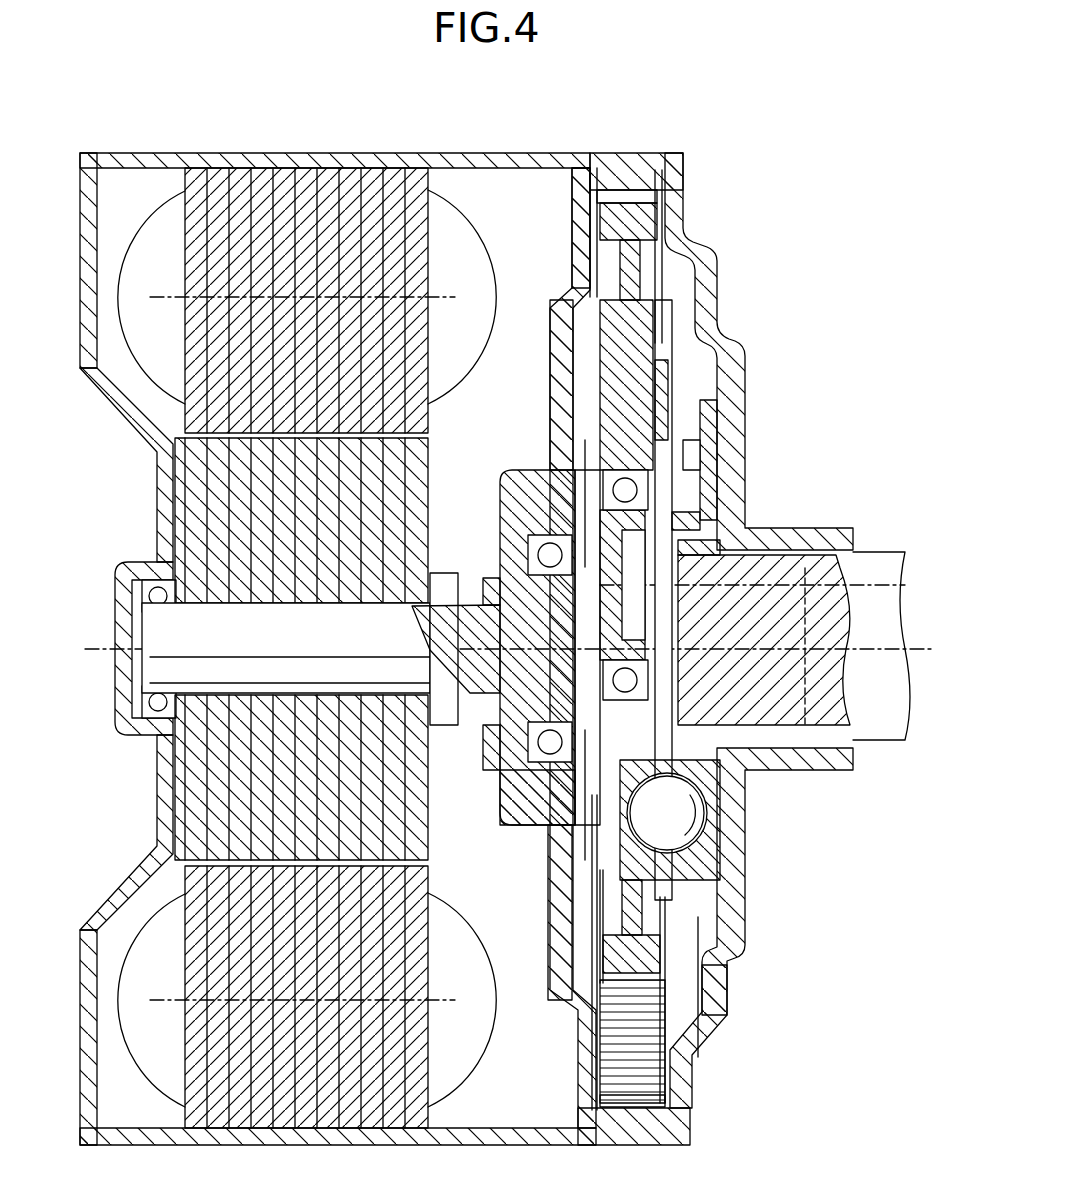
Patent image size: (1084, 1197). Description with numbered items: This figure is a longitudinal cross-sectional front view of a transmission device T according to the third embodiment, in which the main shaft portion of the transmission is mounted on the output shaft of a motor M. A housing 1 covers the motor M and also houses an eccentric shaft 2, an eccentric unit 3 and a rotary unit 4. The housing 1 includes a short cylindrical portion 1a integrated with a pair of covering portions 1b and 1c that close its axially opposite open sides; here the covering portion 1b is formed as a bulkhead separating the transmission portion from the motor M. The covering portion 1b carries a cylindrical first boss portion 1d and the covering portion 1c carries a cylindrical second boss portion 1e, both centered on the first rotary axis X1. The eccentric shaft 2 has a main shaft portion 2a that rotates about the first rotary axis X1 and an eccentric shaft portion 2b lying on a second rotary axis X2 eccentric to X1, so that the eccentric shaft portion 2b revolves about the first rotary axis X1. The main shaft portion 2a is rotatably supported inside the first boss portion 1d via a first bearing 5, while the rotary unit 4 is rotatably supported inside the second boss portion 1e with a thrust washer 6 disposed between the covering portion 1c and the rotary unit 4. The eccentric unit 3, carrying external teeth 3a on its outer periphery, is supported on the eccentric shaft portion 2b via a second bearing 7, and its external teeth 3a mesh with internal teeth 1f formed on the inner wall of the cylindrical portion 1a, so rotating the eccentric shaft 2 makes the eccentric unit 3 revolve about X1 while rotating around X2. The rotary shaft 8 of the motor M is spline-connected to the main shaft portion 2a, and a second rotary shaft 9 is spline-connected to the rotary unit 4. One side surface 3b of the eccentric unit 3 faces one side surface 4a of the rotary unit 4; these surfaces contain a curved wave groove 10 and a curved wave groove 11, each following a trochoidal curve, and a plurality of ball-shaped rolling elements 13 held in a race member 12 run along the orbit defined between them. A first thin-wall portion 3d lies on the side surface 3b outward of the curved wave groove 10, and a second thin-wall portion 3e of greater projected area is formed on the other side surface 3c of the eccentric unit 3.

The housing 1 is at (497, 150).
The cylindrical portion 1a is at (626, 158).
The covering portion 1b is at (578, 262).
The covering portion 1c is at (716, 253).
The first boss portion 1d is at (483, 749).
The second boss portion 1e is at (820, 771).
The internal teeth 1f is at (628, 1105).
The eccentric shaft 2 is at (509, 472).
The main shaft portion 2a is at (490, 583).
The eccentric shaft portion 2b is at (584, 516).
The eccentric unit 3 is at (513, 812).
The external teeth 3a is at (645, 975).
The one side surface 3b is at (712, 950).
The other side surface 3c is at (600, 838).
The first thin-wall portion 3d is at (640, 935).
The second thin-wall portion 3e is at (605, 935).
The rotary unit 4 is at (700, 412).
The one side surface 4a is at (686, 521).
The first bearing 5 is at (600, 775).
The thrust washer 6 is at (712, 480).
The second bearing 7 is at (561, 452).
The rotary shaft 8 is at (311, 661).
The second rotary shaft 9 is at (883, 661).
The curved wave groove 10 is at (600, 368).
The curved wave groove 11 is at (700, 450).
The race member 12 is at (668, 378).
The rolling elements 13 is at (667, 813).
The motor M is at (186, 205).
The transmission device T is at (781, 288).
The first rotary axis X1 is at (512, 650).
The second rotary axis X2 is at (752, 587).